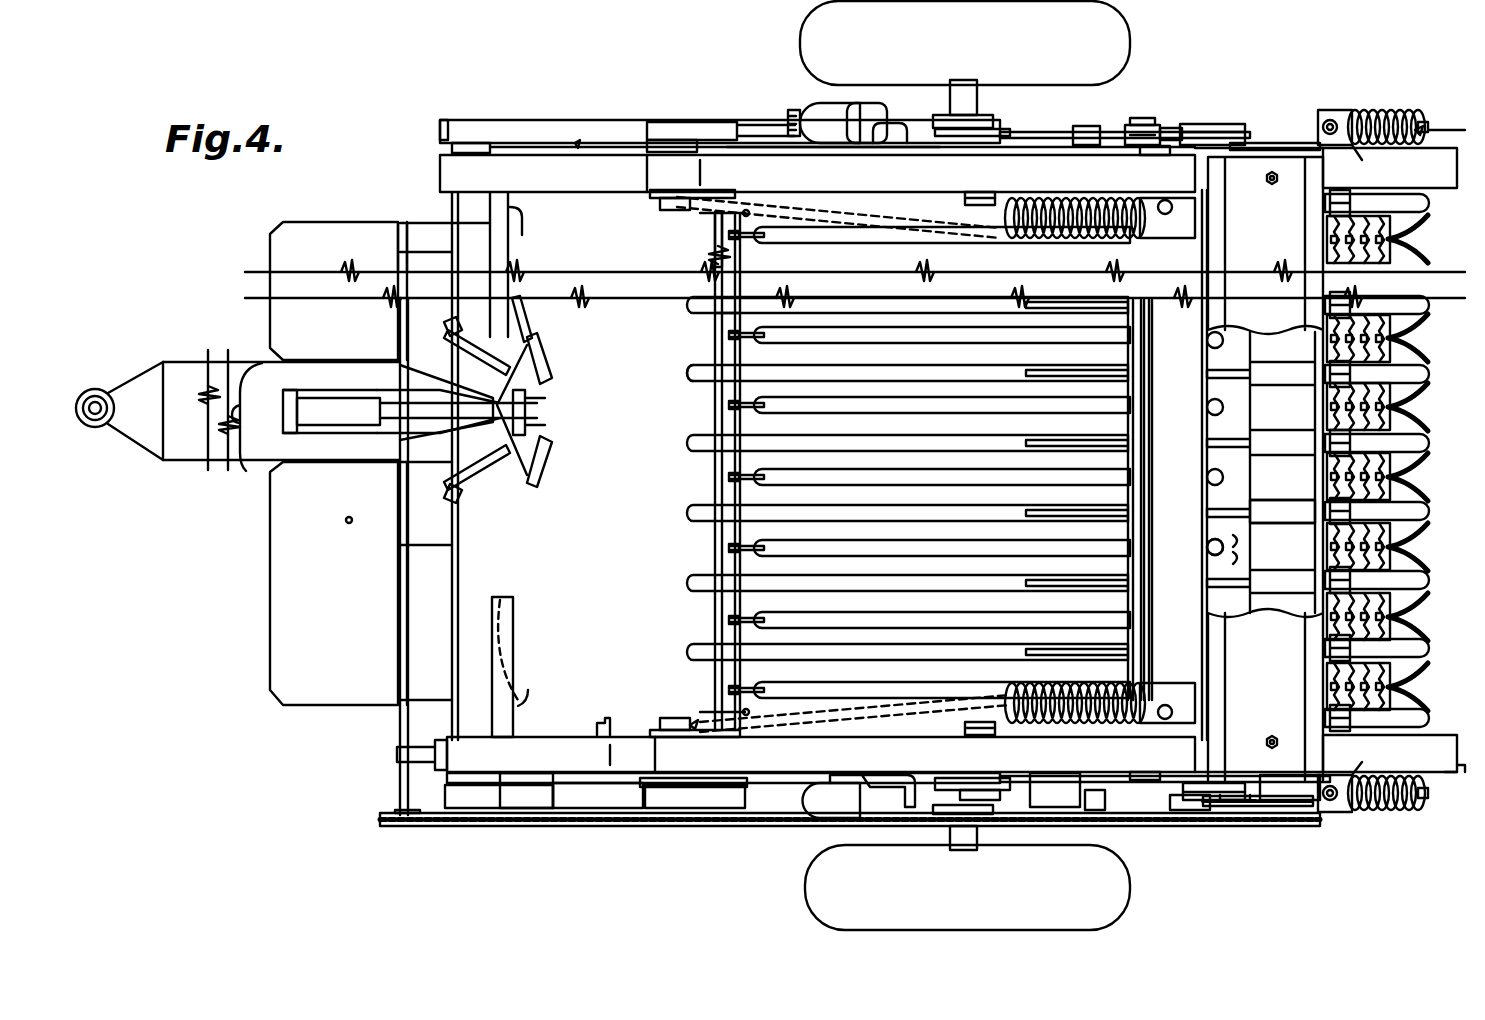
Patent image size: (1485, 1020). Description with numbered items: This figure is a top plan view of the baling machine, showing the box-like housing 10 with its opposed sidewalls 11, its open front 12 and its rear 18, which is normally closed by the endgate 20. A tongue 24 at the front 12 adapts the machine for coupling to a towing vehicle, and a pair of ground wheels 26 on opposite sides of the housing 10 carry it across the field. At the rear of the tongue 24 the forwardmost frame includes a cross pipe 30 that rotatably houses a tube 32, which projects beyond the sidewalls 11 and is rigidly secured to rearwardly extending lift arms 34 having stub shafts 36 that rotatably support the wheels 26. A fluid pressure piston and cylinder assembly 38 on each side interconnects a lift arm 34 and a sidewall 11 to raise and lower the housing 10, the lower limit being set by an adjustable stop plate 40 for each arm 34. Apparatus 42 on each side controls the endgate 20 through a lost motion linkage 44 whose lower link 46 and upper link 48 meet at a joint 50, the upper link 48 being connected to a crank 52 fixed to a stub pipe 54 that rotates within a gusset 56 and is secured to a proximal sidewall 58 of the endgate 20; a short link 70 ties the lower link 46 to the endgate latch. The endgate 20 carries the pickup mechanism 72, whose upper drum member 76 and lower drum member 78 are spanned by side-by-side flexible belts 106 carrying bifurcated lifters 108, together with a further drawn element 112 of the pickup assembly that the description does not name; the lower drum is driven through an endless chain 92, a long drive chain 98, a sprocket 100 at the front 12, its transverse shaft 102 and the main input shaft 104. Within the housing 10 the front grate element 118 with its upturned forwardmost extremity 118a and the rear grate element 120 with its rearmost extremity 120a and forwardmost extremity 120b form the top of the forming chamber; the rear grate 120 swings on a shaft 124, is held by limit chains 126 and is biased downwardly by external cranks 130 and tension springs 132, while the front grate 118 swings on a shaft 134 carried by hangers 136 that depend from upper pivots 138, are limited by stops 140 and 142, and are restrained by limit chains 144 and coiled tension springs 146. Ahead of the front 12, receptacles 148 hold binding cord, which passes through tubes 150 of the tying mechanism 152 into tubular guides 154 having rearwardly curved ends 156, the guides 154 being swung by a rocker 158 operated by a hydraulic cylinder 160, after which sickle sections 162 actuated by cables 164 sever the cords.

The box-like housing 10 is at (578, 143).
The sidewalls 11 is at (702, 160).
The front 12 is at (440, 170).
The rear 18 is at (1440, 770).
The endgate 20 is at (1416, 130).
The tongue 24 is at (150, 440).
The ground wheels 26 is at (1120, 25).
The cross pipe 30 is at (500, 560).
The tube 32 is at (452, 148).
The lift arms 34 is at (520, 125).
The stub shafts 36 is at (963, 80).
The fluid pressure piston and cylinder assembly 38 is at (815, 103).
The adjustable stop plate 40 is at (670, 125).
The apparatus 42 is at (1095, 110).
The lost motion linkage 44 is at (1055, 110).
The lower link 46 is at (985, 135).
The upper link 48 is at (1173, 130).
The joint 50 is at (1140, 120).
The crank 52 is at (1205, 123).
The stub pipe 54 is at (1235, 158).
The gusset 56 is at (1280, 143).
The sidewall of endgate 58 is at (1430, 150).
The short link 70 is at (1140, 150).
The pickup mechanism 72 is at (1455, 620).
The upper drum member 76 is at (1275, 507).
The lower drum member 78 is at (1400, 515).
The endless chain 92 is at (1305, 820).
The drive chain 98 is at (510, 826).
The sprocket 100 is at (400, 812).
The transverse shaft 102 is at (412, 538).
The input shaft 104 is at (260, 392).
The flexible belts 106 is at (1265, 360).
The lifters 108 is at (1425, 405).
The finger pair 112 is at (1428, 490).
The front grate element 118 is at (1155, 423).
The forwardmost extremity of front grate 118a is at (1223, 548).
The rear grate element 120 is at (1155, 352).
The rearmost extremity of rear grate 120a is at (1428, 378).
The forwardmost extremity of rear grate 120b is at (690, 382).
The shaft 124 is at (1323, 185).
The limit chains 126 is at (960, 200).
The external cranks 130 is at (1365, 155).
The tension springs 132 is at (1375, 115).
The shaft 134 is at (712, 520).
The hangers 136 is at (738, 190).
The upper pivots 138 is at (665, 208).
The stop 140 is at (597, 720).
The stop 142 is at (700, 737).
The limit chains 144 is at (835, 225).
The coiled tension springs 146 is at (1050, 232).
The receptacles 148 is at (315, 232).
The tubes 150 is at (455, 330).
The tying mechanism 152 is at (378, 350).
The tubular guides 154 is at (540, 318).
The rearwardly curved ends 156 is at (520, 210).
The rocker 158 is at (495, 430).
The hydraulic cylinder 160 is at (355, 412).
The sickle sections 162 is at (712, 255).
The cables 164 is at (700, 220).